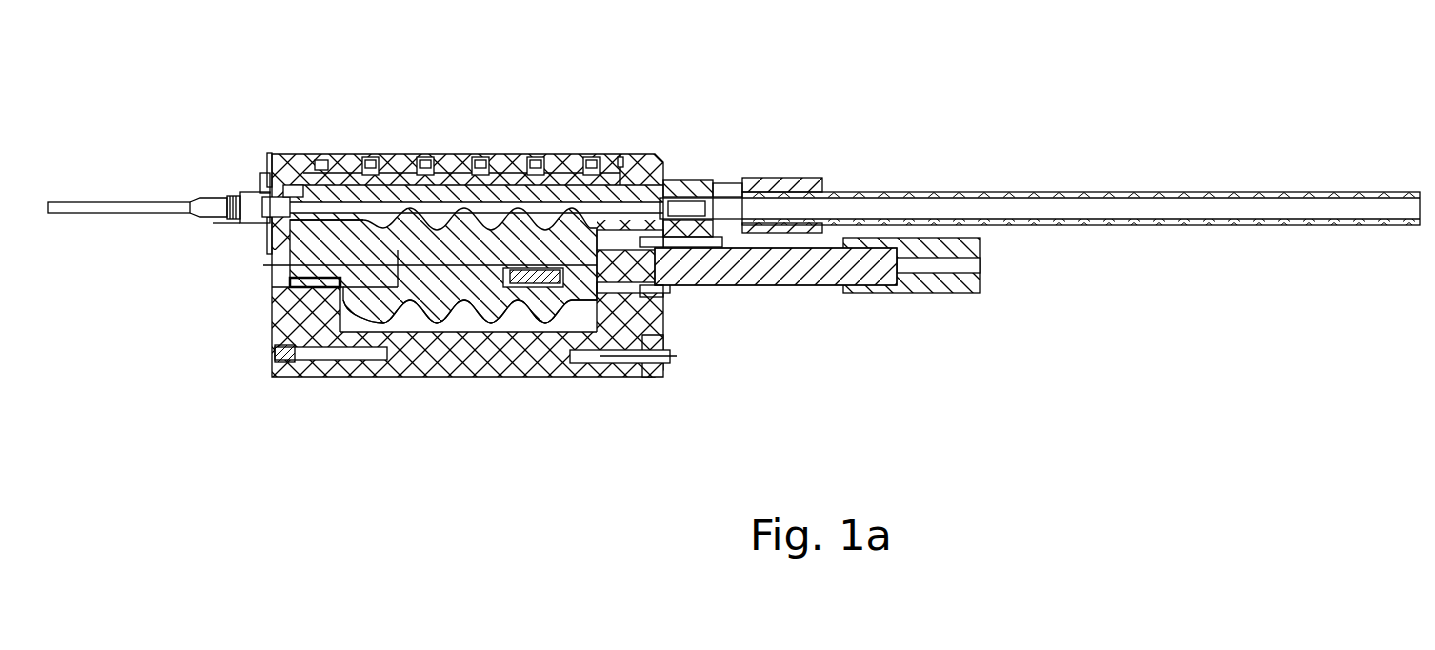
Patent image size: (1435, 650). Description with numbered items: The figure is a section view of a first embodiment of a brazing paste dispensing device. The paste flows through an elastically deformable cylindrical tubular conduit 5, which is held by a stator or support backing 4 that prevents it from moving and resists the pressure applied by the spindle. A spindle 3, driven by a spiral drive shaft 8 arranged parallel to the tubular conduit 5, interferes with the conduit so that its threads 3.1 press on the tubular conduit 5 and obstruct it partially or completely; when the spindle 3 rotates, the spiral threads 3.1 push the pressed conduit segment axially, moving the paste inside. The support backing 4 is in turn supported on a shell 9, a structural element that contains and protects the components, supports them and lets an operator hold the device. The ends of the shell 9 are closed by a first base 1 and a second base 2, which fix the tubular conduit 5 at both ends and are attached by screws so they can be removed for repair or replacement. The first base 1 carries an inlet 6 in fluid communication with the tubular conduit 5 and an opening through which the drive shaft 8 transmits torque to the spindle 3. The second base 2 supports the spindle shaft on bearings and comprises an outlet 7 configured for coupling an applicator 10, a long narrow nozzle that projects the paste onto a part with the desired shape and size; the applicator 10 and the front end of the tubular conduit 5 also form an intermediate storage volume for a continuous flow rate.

The first base 1 is at (663, 335).
The second base 2 is at (272, 305).
The spindle 3 is at (443, 287).
The threads 3.1 is at (495, 310).
The support backing 4 is at (545, 173).
The tubular conduit 5 is at (392, 193).
The inlet 6 is at (680, 180).
The outlet 7 is at (263, 222).
The drive shaft 8 is at (797, 268).
The shell 9 is at (400, 345).
The applicator 10 is at (150, 208).